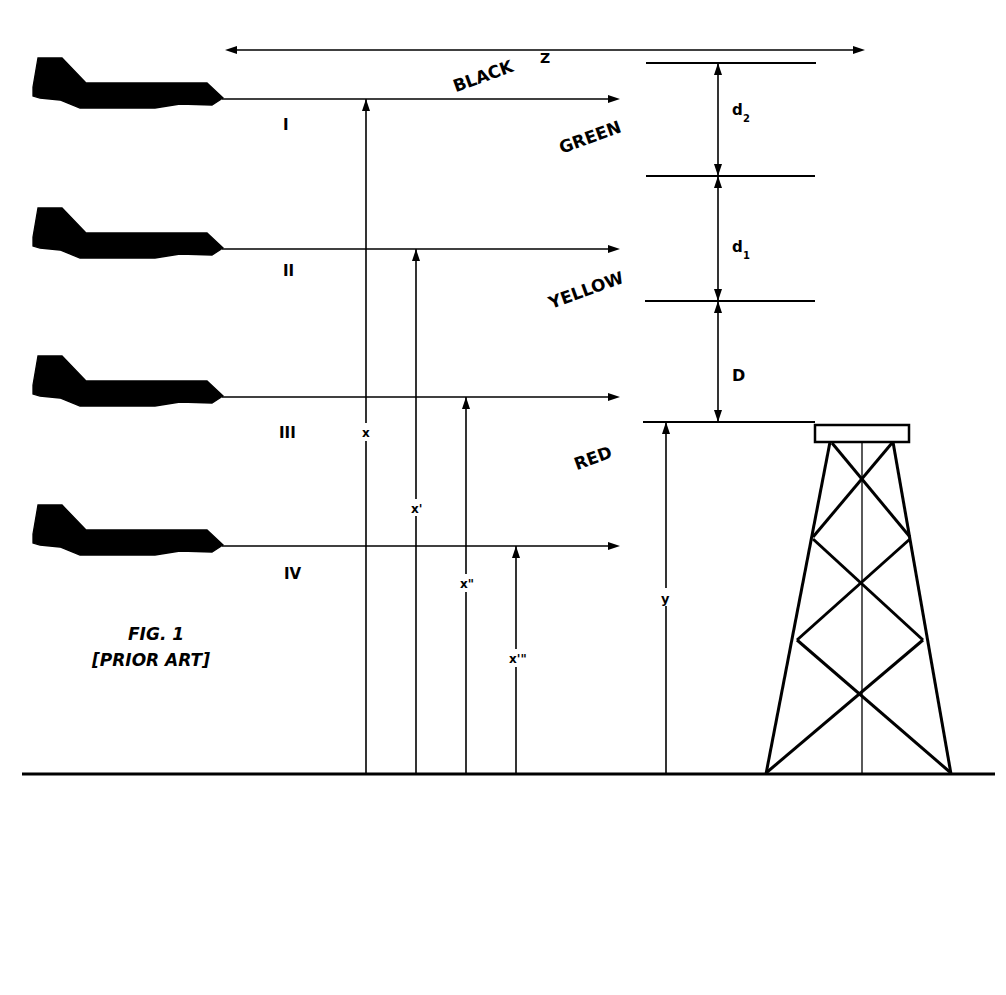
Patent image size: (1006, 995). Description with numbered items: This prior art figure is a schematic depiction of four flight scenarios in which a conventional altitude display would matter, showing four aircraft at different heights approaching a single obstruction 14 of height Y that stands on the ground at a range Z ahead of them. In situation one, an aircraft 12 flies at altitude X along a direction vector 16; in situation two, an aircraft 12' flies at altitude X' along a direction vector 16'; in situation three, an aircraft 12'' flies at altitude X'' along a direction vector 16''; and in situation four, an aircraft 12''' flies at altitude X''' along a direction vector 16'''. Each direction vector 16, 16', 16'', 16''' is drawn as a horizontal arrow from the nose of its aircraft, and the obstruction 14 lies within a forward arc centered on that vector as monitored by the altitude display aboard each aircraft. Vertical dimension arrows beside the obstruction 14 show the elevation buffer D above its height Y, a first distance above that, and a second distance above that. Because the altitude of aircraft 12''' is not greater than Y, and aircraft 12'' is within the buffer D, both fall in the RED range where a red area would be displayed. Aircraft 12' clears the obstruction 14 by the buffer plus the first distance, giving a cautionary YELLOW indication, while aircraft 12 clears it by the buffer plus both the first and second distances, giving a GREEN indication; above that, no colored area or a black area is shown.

The aircraft 12 is at (128, 81).
The aircraft 12' is at (128, 221).
The aircraft 12'' is at (128, 371).
The aircraft 12''' is at (128, 520).
The obstruction 14 is at (909, 518).
The direction vector 16 is at (421, 91).
The direction vector 16' is at (421, 241).
The direction vector 16'' is at (421, 384).
The direction vector 16''' is at (421, 532).